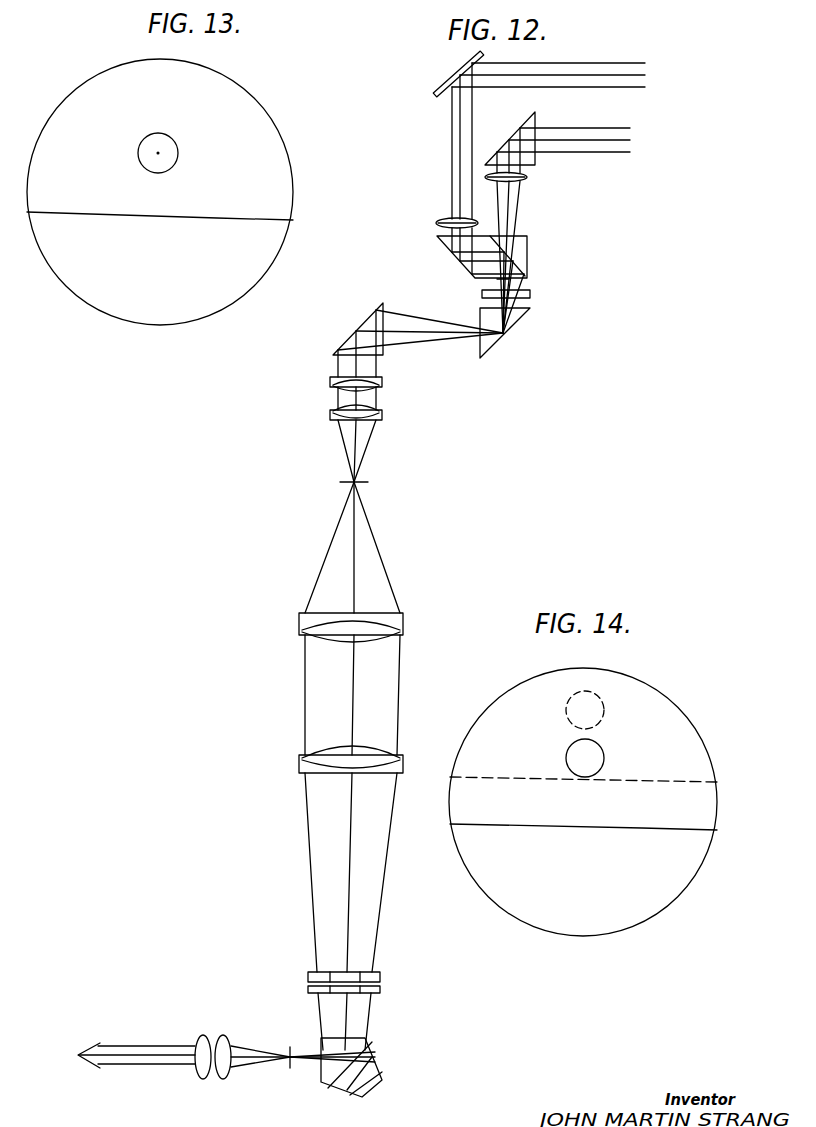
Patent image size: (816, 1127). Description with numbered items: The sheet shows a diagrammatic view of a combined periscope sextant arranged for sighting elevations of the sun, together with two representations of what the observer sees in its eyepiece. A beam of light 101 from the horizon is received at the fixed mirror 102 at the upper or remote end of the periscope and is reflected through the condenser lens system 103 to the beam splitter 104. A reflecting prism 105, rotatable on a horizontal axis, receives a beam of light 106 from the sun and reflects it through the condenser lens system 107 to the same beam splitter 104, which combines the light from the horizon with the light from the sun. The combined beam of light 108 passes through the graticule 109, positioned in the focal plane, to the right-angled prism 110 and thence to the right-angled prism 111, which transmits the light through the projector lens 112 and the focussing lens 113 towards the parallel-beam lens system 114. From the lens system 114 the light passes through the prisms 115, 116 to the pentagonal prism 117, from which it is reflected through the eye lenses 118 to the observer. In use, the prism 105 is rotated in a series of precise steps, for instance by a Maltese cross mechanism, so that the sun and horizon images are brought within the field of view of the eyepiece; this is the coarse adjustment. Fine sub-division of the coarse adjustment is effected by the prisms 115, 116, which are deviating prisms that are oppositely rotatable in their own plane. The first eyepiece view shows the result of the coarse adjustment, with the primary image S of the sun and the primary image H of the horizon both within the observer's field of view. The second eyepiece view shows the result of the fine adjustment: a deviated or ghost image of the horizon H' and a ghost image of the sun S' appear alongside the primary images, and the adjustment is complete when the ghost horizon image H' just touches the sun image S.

In FIG. 12, the beam of light from the horizon 101 is at (498, 141).
In FIG. 12, the fixed mirror 102 is at (463, 70).
In FIG. 12, the condenser lens system 103 is at (437, 223).
In FIG. 12, the beam splitter 104 is at (438, 236).
In FIG. 12, the reflecting prism 105 is at (508, 137).
In FIG. 12, the beam of light from the sun 106 is at (486, 121).
In FIG. 12, the condenser lens system 107 is at (485, 176).
In FIG. 12, the combined beam of light 108 is at (502, 279).
In FIG. 12, the graticule 109 is at (482, 294).
In FIG. 12, the right-angled prism 110 is at (495, 347).
In FIG. 12, the right-angled prism 111 is at (345, 341).
In FIG. 12, the projector lens 112 is at (330, 381).
In FIG. 12, the focussing lens 113 is at (330, 414).
In FIG. 12, the parallel-beam lens system 114 is at (305, 752).
In FIG. 12, the prism 115 is at (308, 975).
In FIG. 12, the prism 116 is at (308, 990).
In FIG. 12, the pentagonal prism 117 is at (383, 1062).
In FIG. 12, the eye lenses 118 is at (226, 1028).
In FIG. 13, the primary image of the sun S is at (222, 122).
In FIG. 14, the primary image of the sun S is at (642, 739).
In FIG. 13, the primary image of the horizon H is at (174, 195).
In FIG. 14, the primary image of the horizon H is at (598, 806).
In FIG. 14, the ghost image of the sun S' is at (528, 694).
In FIG. 14, the ghost image of the horizon H' is at (570, 763).